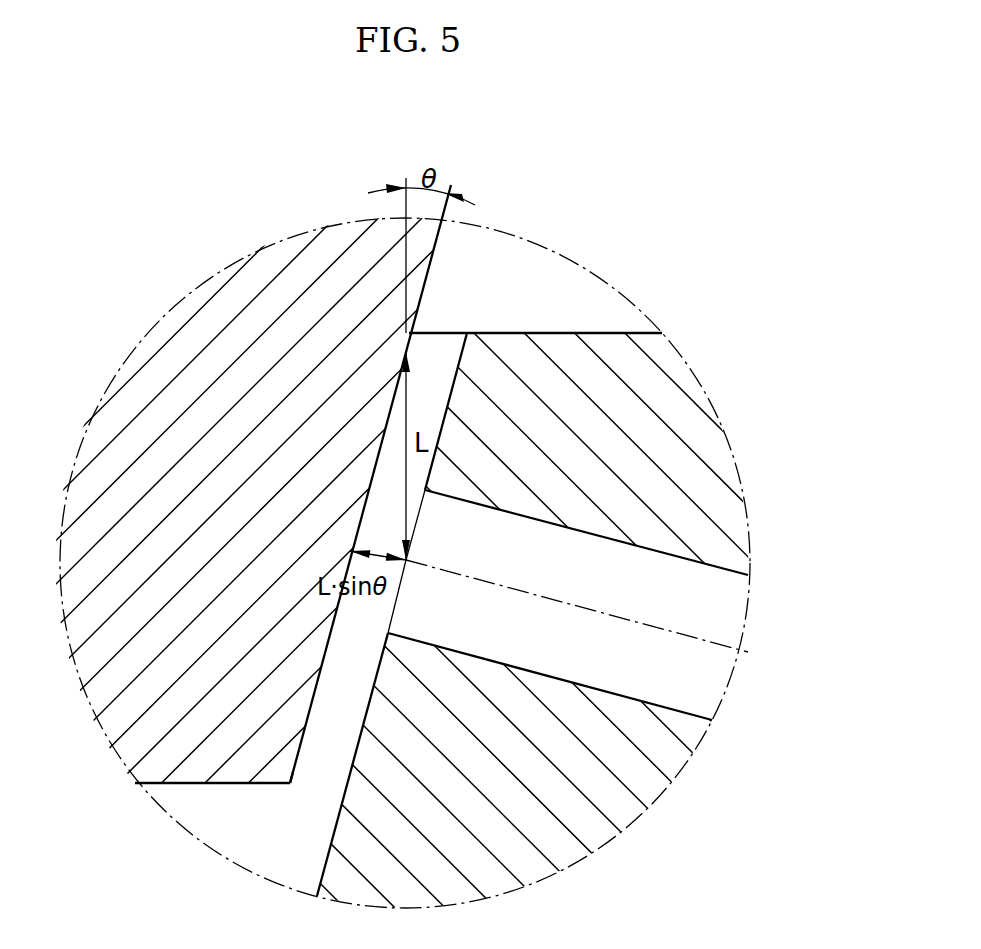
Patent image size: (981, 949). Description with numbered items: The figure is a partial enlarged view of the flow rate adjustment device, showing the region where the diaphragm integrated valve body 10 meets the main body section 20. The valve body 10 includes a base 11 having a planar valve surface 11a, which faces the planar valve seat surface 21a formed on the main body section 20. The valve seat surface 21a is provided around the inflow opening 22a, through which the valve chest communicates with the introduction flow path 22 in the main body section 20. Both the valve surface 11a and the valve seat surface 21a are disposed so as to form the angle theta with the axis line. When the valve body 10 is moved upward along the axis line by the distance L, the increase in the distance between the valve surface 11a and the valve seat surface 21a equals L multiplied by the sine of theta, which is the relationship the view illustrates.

The diaphragm integrated valve body 10 is at (173, 807).
The base 11 is at (235, 783).
The valve surface 11a is at (298, 766).
The main body section 20 is at (607, 832).
The valve seat surface 21a is at (385, 648).
The introduction flow path 22 is at (670, 708).
The inflow opening 22a is at (440, 549).